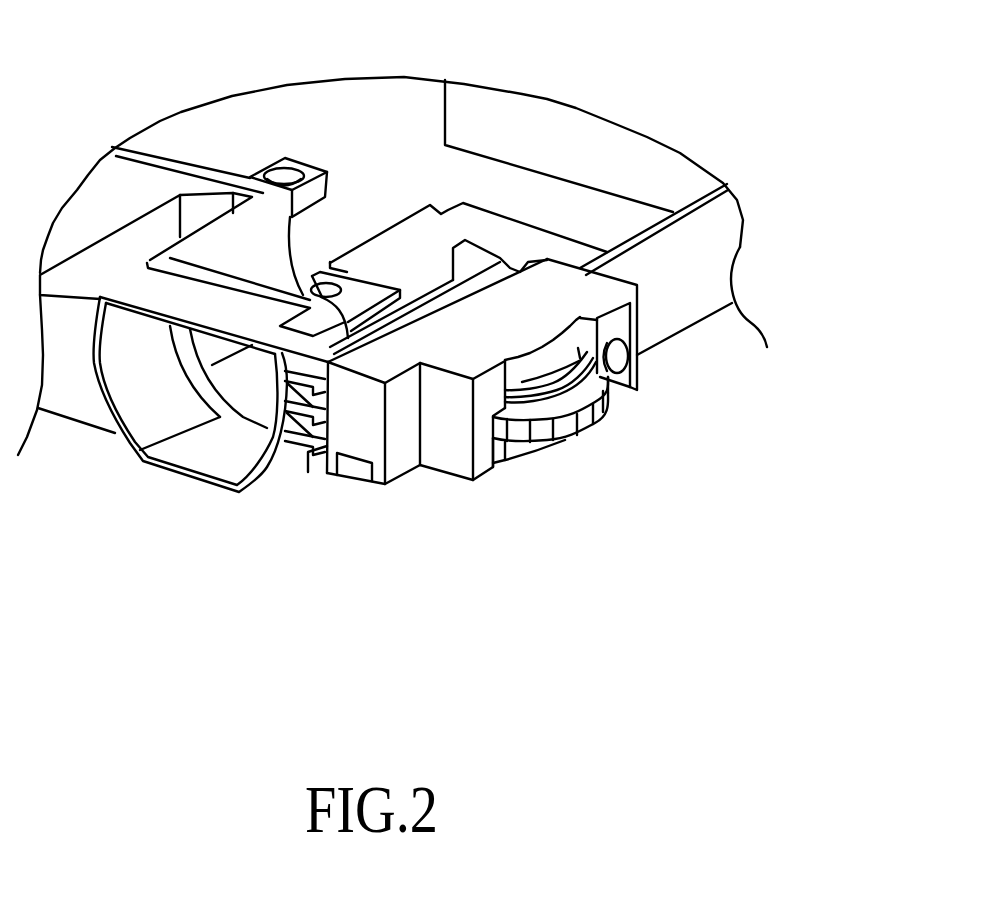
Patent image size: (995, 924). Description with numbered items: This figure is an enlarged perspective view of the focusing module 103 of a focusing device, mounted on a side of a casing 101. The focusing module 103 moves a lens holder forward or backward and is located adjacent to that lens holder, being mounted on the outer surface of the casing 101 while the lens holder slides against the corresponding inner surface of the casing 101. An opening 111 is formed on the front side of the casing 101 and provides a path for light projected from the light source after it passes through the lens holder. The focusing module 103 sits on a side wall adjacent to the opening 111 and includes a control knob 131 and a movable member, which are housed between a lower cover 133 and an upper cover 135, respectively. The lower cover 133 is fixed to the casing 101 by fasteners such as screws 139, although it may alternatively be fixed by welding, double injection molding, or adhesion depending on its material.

The casing 101 is at (271, 166).
The focusing module 103 is at (523, 476).
The opening 111 is at (227, 457).
The control knob 131 is at (612, 420).
The lower cover 133 is at (538, 452).
The upper cover 135 is at (595, 291).
The screws 139 is at (617, 360).